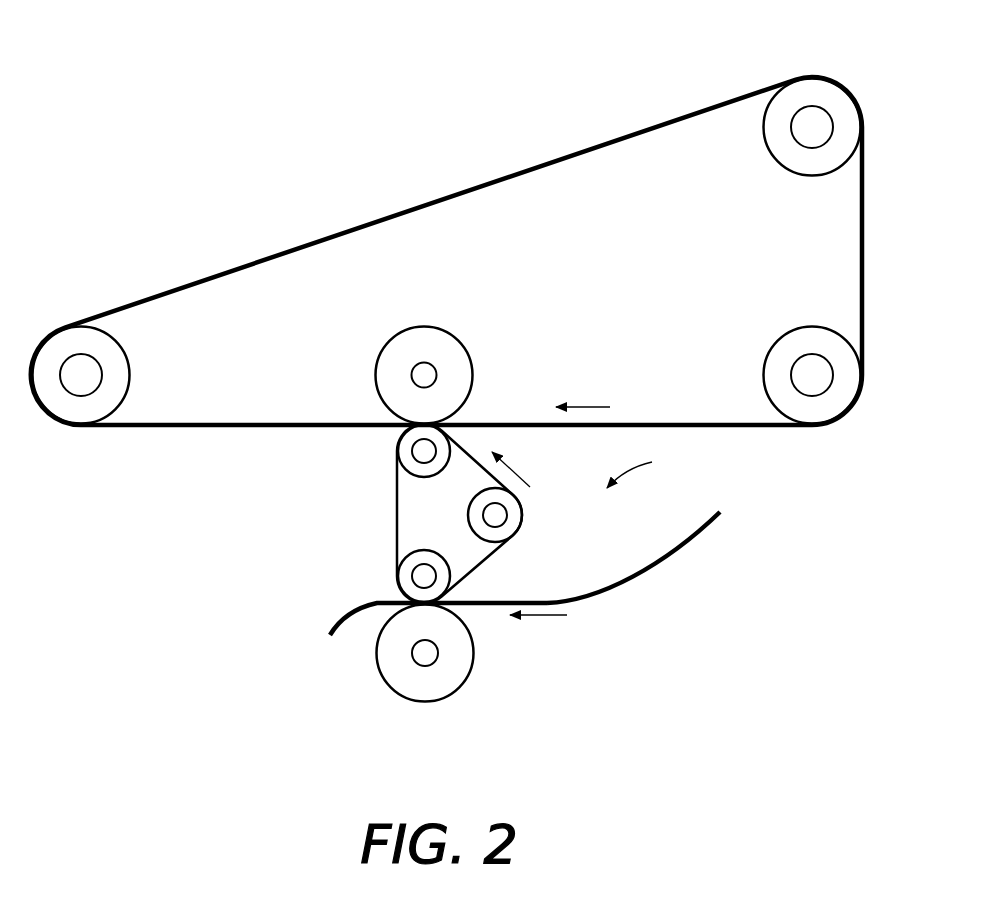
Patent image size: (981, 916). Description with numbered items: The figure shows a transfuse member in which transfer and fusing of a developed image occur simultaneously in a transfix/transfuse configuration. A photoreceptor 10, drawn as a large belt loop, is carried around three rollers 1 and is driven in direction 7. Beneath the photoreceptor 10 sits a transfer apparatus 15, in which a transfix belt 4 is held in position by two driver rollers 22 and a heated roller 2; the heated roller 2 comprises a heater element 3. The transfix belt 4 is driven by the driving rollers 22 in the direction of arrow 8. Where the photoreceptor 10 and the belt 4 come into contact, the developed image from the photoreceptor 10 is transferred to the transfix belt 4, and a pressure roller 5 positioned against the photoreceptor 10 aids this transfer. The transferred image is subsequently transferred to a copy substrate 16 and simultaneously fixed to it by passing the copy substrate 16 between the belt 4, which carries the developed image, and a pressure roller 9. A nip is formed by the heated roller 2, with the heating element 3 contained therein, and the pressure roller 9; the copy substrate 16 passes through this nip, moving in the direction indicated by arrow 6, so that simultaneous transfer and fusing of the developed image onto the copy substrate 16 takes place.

The rollers 1 is at (815, 87).
The heated roller 2 is at (400, 588).
The heater element 3 is at (427, 573).
The transfix belt 4 is at (397, 487).
The pressure roller 5 is at (448, 345).
The web travel direction 6 is at (535, 617).
The direction 7 is at (588, 405).
The arrow 8 is at (518, 472).
The pressure roller 9 is at (412, 690).
The photoreceptor 10 is at (152, 450).
The transfer apparatus 15 is at (660, 469).
The copy substrate 16 is at (655, 562).
The driver rollers 22 is at (397, 444).